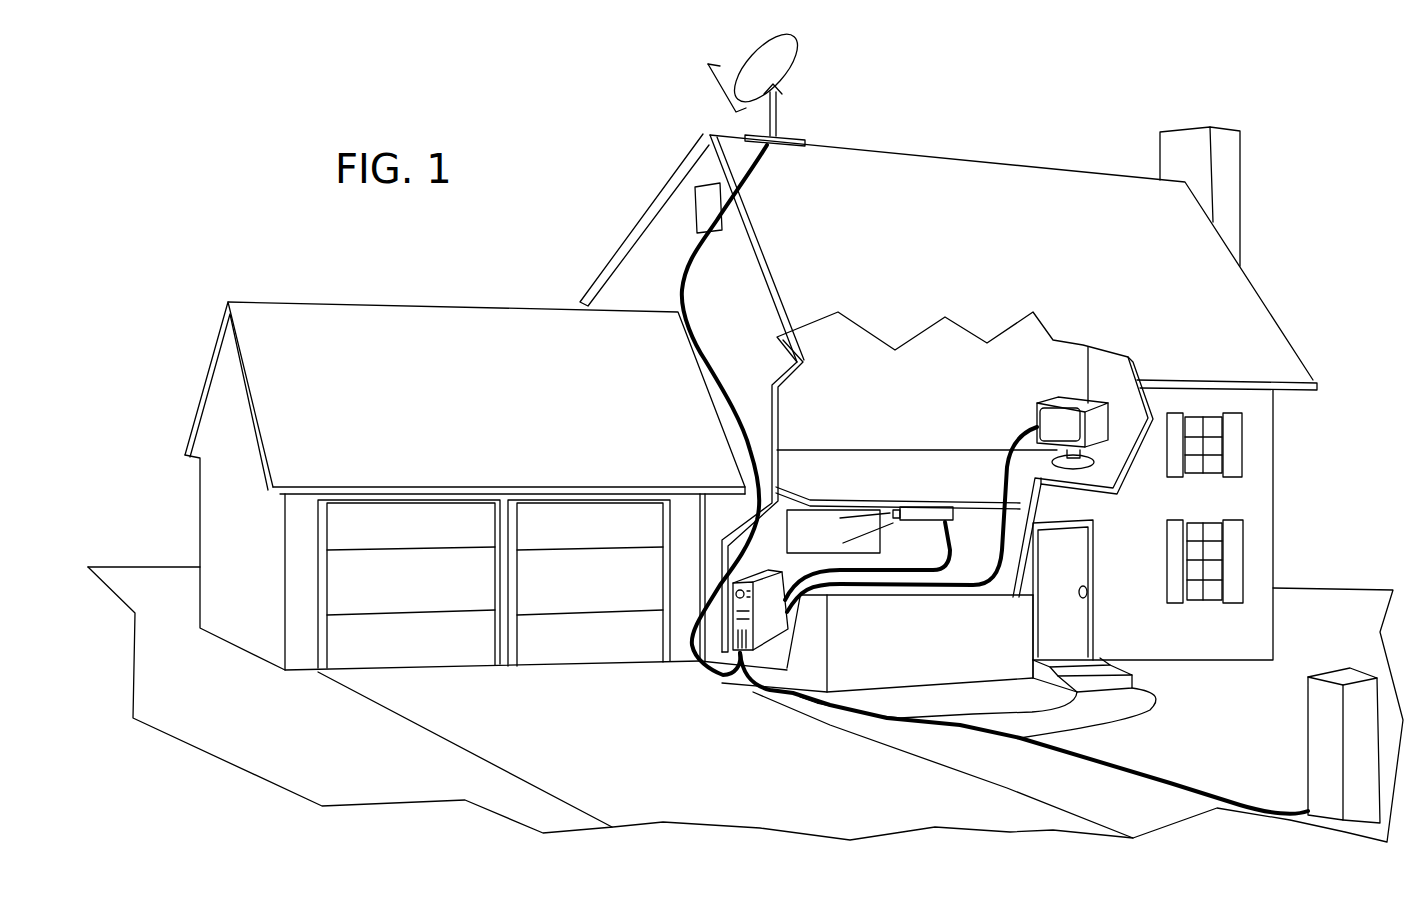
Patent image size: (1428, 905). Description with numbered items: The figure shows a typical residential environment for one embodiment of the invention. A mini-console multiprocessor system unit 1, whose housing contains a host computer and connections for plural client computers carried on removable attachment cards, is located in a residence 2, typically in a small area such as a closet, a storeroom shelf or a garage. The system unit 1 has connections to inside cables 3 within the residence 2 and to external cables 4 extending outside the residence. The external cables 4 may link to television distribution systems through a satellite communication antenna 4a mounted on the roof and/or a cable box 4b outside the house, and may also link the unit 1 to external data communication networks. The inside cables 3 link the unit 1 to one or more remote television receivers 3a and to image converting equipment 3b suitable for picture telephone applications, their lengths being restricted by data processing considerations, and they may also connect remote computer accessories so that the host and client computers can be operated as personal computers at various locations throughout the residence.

The mini-console multiprocessor system unit 1 is at (772, 623).
The residence 2 is at (1010, 172).
The inside cables 3 is at (893, 584).
The remote television receiver 3a is at (1037, 407).
The image converting equipment 3b is at (922, 507).
The external cables 4 is at (697, 663).
The satellite communication antenna 4a is at (782, 62).
The cable box 4b is at (1307, 733).